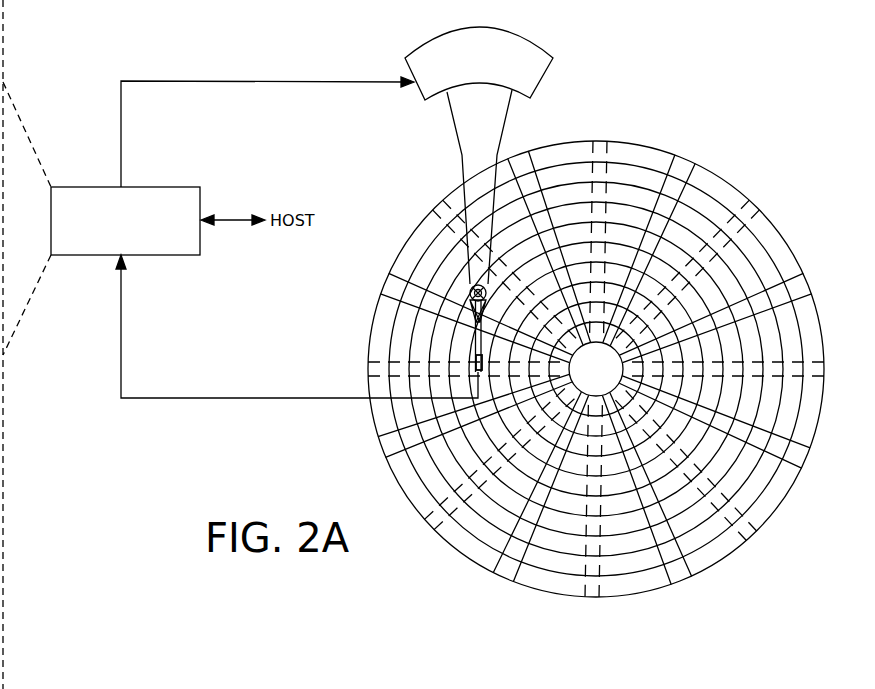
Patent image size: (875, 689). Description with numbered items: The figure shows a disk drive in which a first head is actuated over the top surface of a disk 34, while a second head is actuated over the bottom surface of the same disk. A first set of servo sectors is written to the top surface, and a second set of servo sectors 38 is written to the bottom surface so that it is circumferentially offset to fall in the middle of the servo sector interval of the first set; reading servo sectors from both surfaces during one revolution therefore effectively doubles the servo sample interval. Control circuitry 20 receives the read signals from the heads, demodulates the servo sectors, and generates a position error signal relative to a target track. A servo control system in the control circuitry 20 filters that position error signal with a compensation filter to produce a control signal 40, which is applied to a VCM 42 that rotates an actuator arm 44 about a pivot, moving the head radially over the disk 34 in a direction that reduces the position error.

The control circuitry 20 is at (163, 187).
The disk 34 is at (748, 176).
The second set of servo sectors 38 is at (826, 373).
The control signal 40 is at (120, 112).
The VCM 42 is at (418, 92).
The actuator arm 44 is at (463, 146).